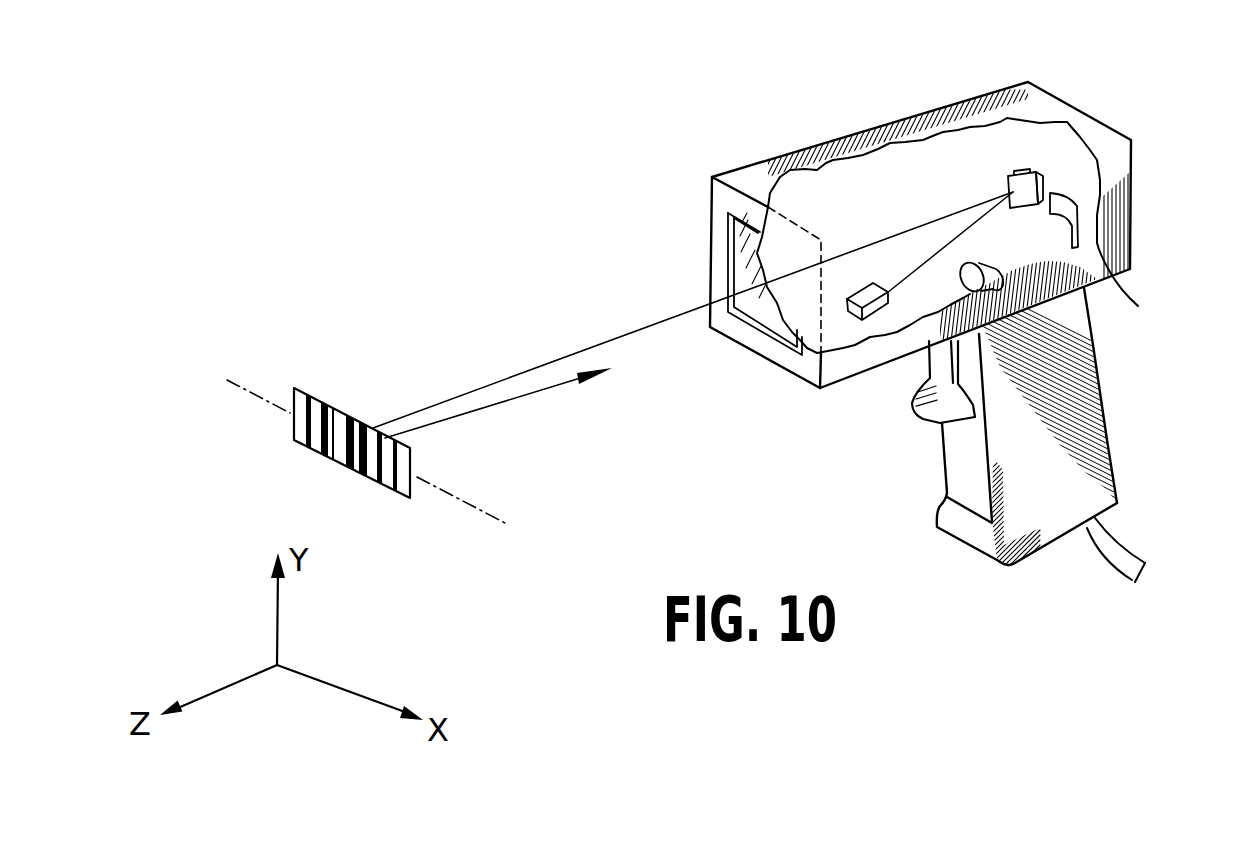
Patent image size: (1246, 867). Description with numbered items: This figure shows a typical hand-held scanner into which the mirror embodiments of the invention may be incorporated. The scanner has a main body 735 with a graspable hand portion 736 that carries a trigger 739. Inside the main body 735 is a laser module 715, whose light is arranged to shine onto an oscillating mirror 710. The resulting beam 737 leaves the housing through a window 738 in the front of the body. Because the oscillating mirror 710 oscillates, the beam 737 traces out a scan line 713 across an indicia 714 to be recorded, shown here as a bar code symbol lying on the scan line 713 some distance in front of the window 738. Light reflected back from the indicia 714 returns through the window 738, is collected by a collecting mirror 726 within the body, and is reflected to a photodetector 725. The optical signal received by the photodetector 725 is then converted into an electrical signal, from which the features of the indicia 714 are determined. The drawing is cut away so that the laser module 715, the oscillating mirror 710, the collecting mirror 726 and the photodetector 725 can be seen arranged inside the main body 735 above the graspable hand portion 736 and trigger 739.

The oscillating mirror 710 is at (1040, 177).
The scan line 713 is at (241, 388).
The indicia 714 is at (343, 414).
The laser module 715 is at (870, 306).
The photodetector 725 is at (995, 278).
The collecting mirror 726 is at (1077, 215).
The main body 735 is at (834, 118).
The graspable hand portion 736 is at (1112, 457).
The beam 737 is at (522, 375).
The window 738 is at (745, 242).
The trigger 739 is at (920, 416).